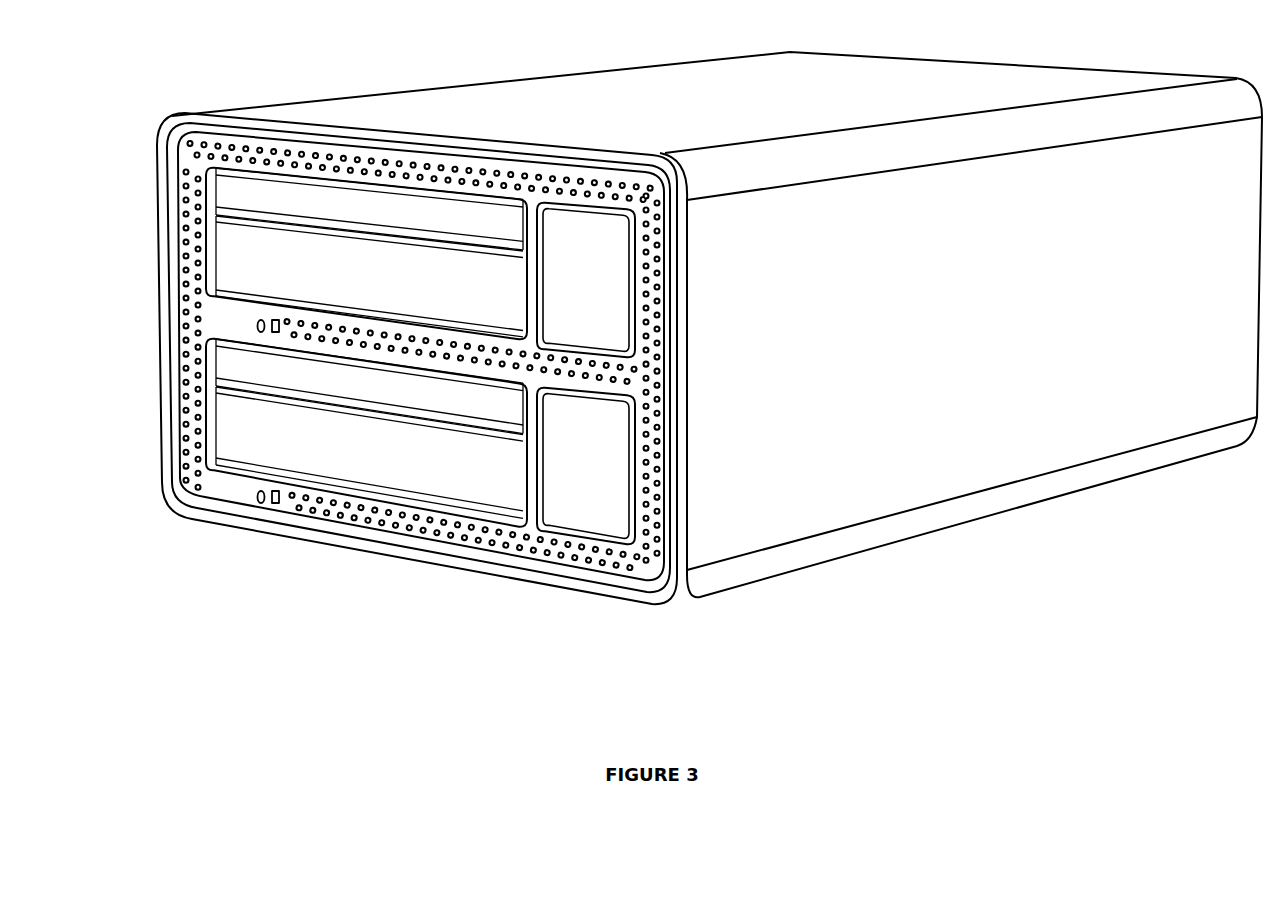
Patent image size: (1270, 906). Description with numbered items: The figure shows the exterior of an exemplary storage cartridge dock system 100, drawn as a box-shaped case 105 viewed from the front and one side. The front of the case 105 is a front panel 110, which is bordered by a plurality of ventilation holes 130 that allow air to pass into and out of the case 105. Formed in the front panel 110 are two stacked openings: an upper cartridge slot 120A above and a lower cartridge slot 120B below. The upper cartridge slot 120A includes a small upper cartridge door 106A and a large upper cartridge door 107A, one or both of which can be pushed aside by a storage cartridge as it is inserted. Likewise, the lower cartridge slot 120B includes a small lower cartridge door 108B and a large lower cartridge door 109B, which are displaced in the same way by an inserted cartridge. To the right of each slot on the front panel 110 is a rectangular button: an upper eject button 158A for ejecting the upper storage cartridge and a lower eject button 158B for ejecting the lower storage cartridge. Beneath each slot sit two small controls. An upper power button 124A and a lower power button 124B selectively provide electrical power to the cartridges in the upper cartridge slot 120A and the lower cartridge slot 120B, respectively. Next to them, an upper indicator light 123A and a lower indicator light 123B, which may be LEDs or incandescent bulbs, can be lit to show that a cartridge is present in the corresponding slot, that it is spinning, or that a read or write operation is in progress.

The storage cartridge dock system 100 is at (654, 346).
The case 105 is at (842, 475).
The front panel 110 is at (163, 505).
The ventilation holes 130 is at (203, 137).
The upper cartridge slot 120A is at (287, 239).
The lower cartridge slot 120B is at (287, 418).
The small upper cartridge door 106A is at (230, 190).
The large upper cartridge door 107A is at (242, 266).
The small lower cartridge door 108B is at (230, 362).
The large lower cartridge door 109B is at (242, 437).
The upper indicator light 123A is at (276, 318).
The upper power button 124A is at (261, 318).
The lower indicator light 123B is at (276, 490).
The lower power button 124B is at (261, 489).
The upper eject button 158A is at (610, 310).
The lower eject button 158B is at (610, 465).